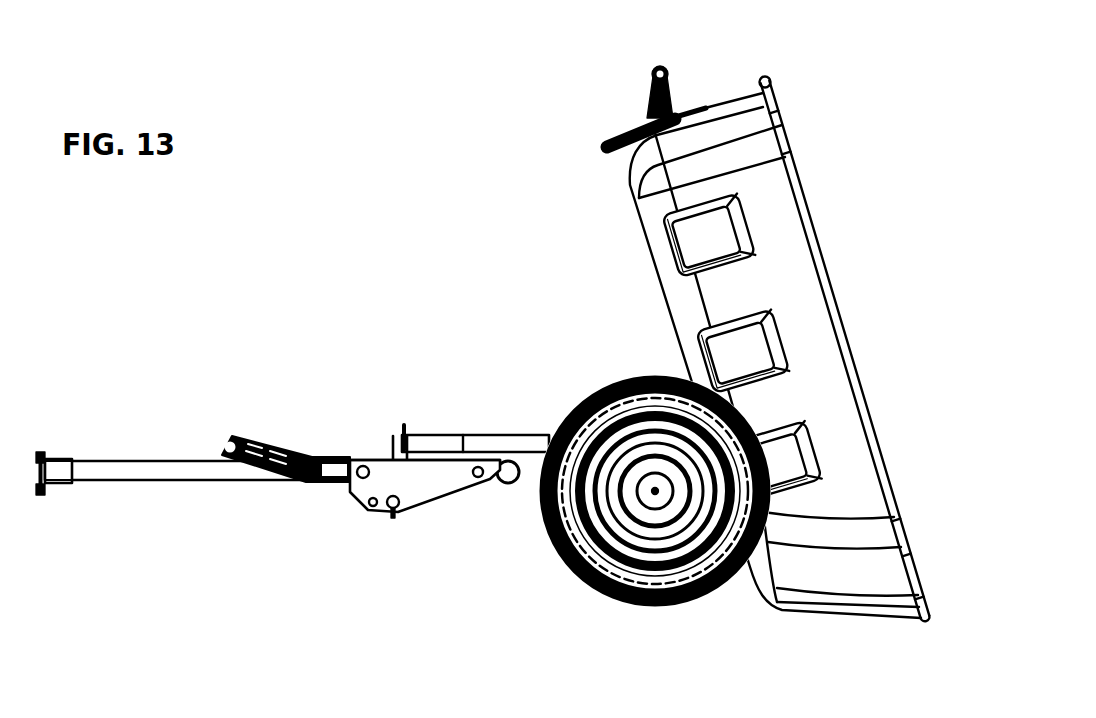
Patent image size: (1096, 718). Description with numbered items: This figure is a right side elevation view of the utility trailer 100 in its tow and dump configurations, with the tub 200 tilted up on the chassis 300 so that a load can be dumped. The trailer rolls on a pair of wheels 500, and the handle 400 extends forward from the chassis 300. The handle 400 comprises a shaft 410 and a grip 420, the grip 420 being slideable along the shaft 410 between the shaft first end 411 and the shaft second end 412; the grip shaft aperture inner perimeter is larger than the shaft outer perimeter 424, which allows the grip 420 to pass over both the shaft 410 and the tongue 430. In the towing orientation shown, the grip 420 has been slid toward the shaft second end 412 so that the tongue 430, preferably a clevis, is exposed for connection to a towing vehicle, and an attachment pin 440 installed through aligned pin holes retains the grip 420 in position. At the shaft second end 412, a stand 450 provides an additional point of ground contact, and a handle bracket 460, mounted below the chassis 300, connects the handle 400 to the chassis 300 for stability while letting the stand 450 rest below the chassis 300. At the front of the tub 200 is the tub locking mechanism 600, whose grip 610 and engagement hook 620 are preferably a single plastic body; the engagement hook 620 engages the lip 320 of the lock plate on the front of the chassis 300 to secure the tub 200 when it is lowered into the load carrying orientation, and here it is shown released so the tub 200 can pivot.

The utility trailer 100 is at (512, 150).
The tub 200 is at (790, 178).
The chassis 300 is at (532, 437).
The lip 320 is at (404, 434).
The handle 400 is at (240, 370).
The shaft 410 is at (167, 477).
The shaft first end 411 is at (77, 494).
The shaft second end 412 is at (463, 496).
The grip 420 is at (231, 440).
The shaft outer perimeter 424 is at (352, 458).
The tongue 430 is at (58, 456).
The attachment pin 440 is at (36, 458).
The stand 450 is at (506, 466).
The handle bracket 460 is at (434, 378).
The wheels 500 is at (550, 525).
The tub locking mechanism 600 is at (657, 68).
The grip 610 is at (650, 91).
The engagement hook 620 is at (608, 155).